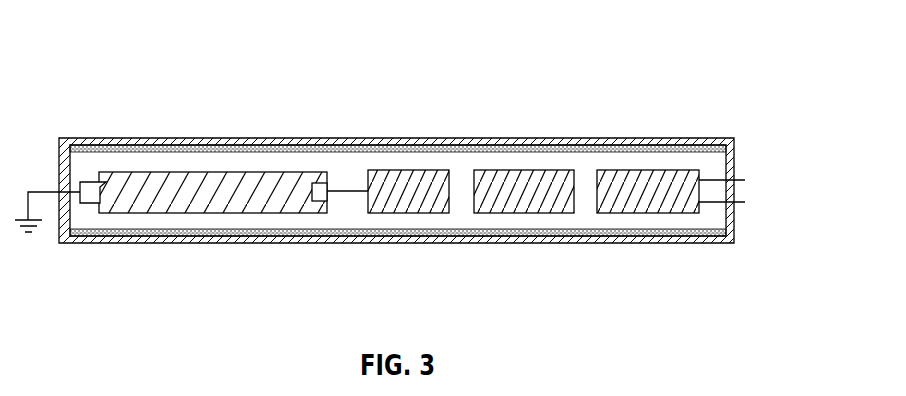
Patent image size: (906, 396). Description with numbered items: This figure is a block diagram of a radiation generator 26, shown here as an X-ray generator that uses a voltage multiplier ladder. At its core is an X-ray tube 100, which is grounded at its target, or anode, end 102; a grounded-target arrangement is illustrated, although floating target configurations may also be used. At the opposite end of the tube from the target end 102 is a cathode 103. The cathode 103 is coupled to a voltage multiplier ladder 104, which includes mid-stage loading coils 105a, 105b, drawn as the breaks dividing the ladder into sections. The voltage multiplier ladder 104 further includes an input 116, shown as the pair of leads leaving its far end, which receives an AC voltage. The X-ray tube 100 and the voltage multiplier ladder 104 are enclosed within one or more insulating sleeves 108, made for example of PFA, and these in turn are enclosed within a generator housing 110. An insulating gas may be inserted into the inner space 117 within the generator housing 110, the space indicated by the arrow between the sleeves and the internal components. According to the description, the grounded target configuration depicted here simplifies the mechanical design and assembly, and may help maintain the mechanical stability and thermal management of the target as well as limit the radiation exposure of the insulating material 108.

The heating device 26 is at (670, 40).
The X-ray tube 100 is at (235, 205).
The target end 102 is at (87, 203).
The cathode 103 is at (322, 203).
The voltage multiplier ladder 104 is at (507, 212).
The mid-stage loading coil 105a is at (587, 168).
The mid-stage loading coil 105b is at (455, 168).
The insulating sleeve 108 is at (415, 238).
The generator housing 110 is at (188, 145).
The input 116 is at (703, 178).
The inner space 117 is at (369, 162).